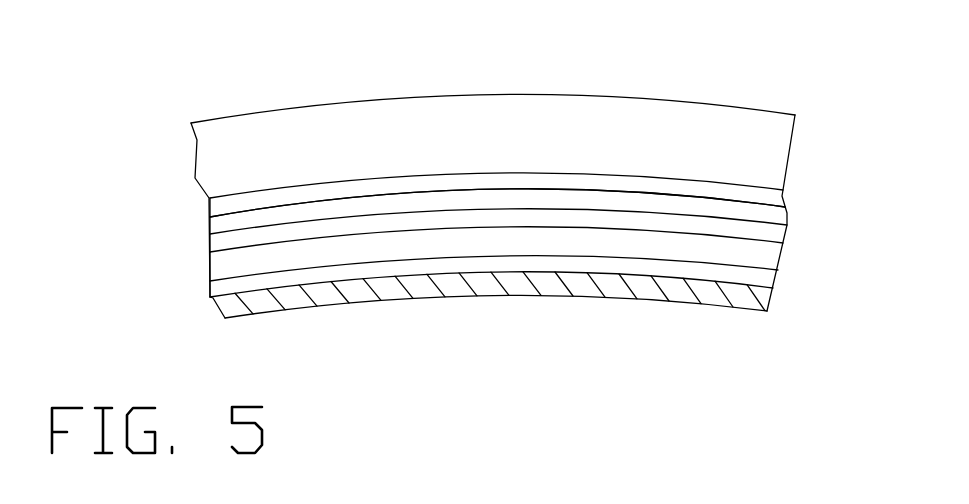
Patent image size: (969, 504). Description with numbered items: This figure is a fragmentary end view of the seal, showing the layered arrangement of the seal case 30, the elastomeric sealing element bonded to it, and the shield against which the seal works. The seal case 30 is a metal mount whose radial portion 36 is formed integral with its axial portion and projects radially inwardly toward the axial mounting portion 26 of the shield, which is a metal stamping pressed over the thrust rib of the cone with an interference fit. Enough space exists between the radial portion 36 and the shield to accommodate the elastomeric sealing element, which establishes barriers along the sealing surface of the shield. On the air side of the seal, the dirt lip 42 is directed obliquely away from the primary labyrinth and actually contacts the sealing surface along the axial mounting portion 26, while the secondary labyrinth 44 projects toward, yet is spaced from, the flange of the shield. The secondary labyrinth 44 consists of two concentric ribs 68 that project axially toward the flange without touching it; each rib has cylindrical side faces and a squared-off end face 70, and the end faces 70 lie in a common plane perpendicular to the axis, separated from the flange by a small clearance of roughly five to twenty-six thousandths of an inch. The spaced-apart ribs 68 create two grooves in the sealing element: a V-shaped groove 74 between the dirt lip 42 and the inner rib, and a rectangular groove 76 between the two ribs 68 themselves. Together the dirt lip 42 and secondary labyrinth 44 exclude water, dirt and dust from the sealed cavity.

The seal case 30 is at (365, 80).
The radial portion 36 is at (420, 143).
The concentric ribs 68 is at (513, 217).
The end face 70 is at (410, 223).
The groove 76 is at (712, 213).
The secondary labyrinth 44 is at (200, 199).
The dirt lip 42 is at (210, 263).
The groove 74 is at (748, 262).
The axial mounting portion 26 is at (467, 285).